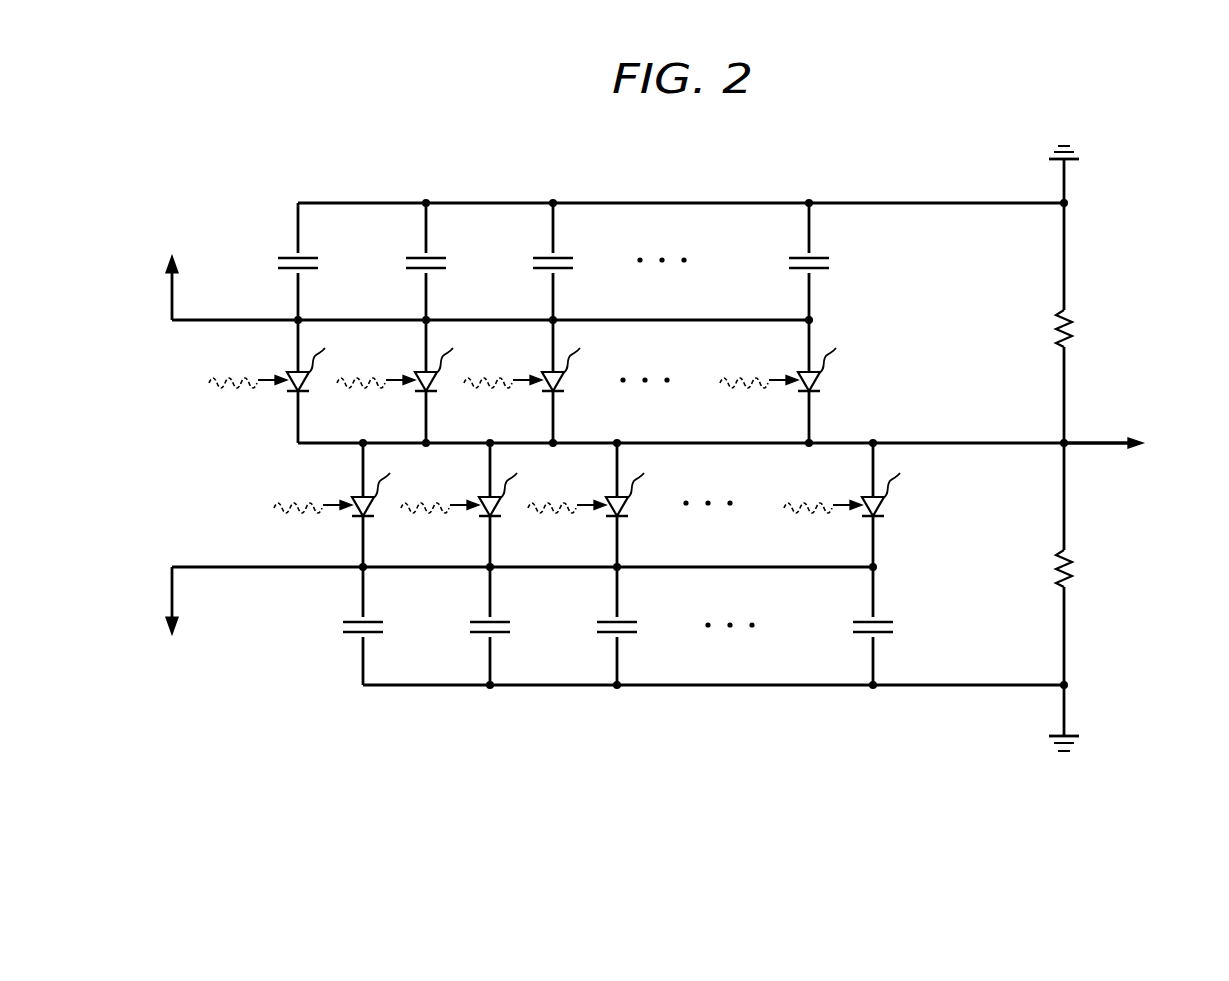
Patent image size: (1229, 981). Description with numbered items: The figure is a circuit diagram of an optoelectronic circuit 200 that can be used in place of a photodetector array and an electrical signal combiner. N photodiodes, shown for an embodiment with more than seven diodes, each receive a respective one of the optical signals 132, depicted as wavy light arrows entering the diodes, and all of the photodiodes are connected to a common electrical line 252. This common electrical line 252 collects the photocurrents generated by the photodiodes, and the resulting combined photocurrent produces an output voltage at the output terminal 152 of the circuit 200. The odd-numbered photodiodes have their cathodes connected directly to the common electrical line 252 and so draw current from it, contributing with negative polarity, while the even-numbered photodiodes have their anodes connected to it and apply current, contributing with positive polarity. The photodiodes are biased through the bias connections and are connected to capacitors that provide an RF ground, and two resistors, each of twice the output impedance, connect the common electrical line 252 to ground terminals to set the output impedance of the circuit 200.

The optoelectronic circuit 200 is at (698, 140).
The optical signals 132 is at (251, 394).
The common electrical line 252 is at (835, 443).
The output terminal 152 is at (1097, 443).